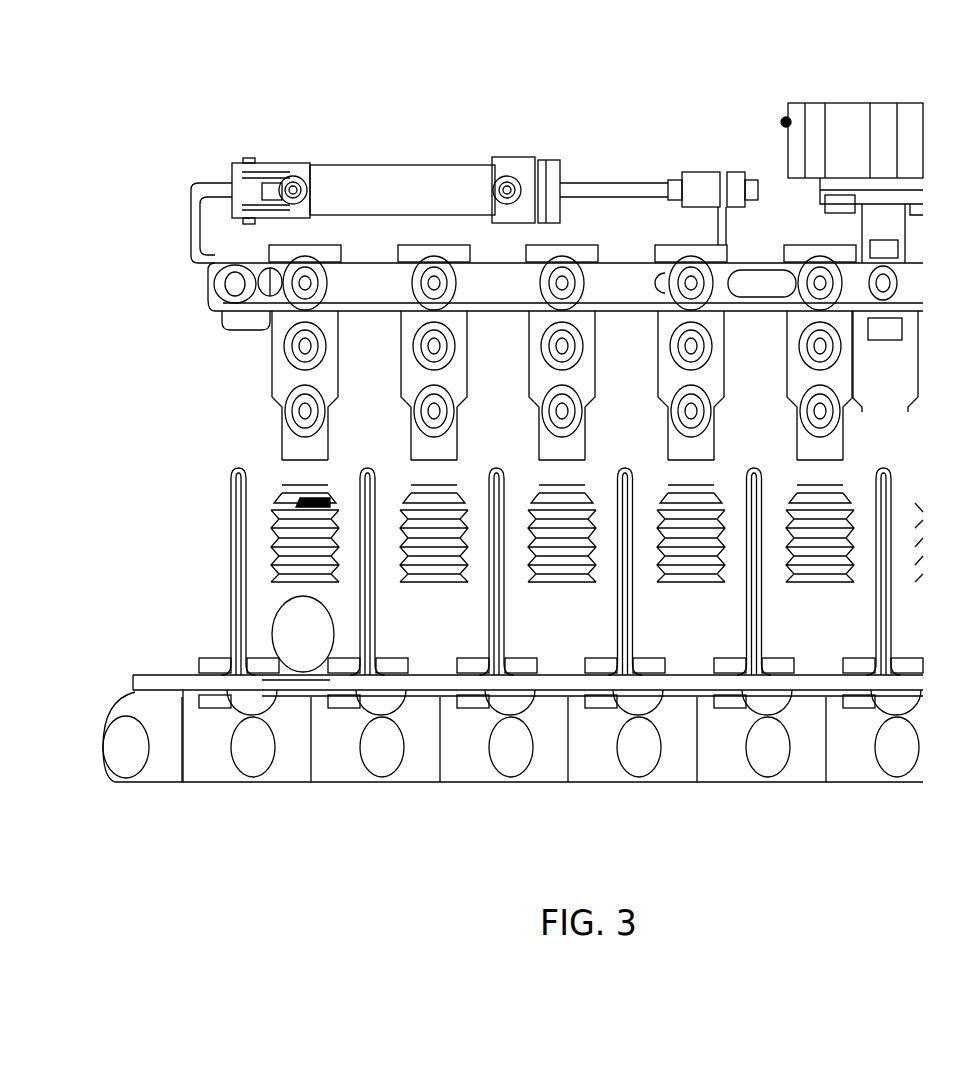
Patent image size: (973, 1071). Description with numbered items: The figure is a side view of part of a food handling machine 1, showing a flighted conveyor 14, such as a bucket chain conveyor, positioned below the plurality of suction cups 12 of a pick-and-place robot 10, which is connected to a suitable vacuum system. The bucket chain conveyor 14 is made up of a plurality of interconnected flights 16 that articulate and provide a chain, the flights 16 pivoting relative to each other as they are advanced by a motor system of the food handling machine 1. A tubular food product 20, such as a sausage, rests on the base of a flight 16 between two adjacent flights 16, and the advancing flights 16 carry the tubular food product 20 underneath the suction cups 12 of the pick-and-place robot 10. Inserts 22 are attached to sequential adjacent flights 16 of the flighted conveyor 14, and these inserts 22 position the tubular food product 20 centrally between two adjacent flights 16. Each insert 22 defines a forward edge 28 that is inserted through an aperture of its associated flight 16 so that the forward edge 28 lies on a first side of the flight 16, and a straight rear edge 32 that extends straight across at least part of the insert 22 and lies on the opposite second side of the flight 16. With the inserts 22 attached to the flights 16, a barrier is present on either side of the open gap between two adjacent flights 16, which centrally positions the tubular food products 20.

The food handling machine 1 is at (135, 73).
The pick-and-place robot 10 is at (390, 186).
The suction cups 12 is at (312, 503).
The flighted conveyor 14 is at (148, 705).
The flights 16 is at (232, 572).
The tubular food product 20 is at (300, 656).
The insert 22 is at (206, 712).
The forward edge 28 is at (264, 660).
The rear edge 32 is at (222, 660).